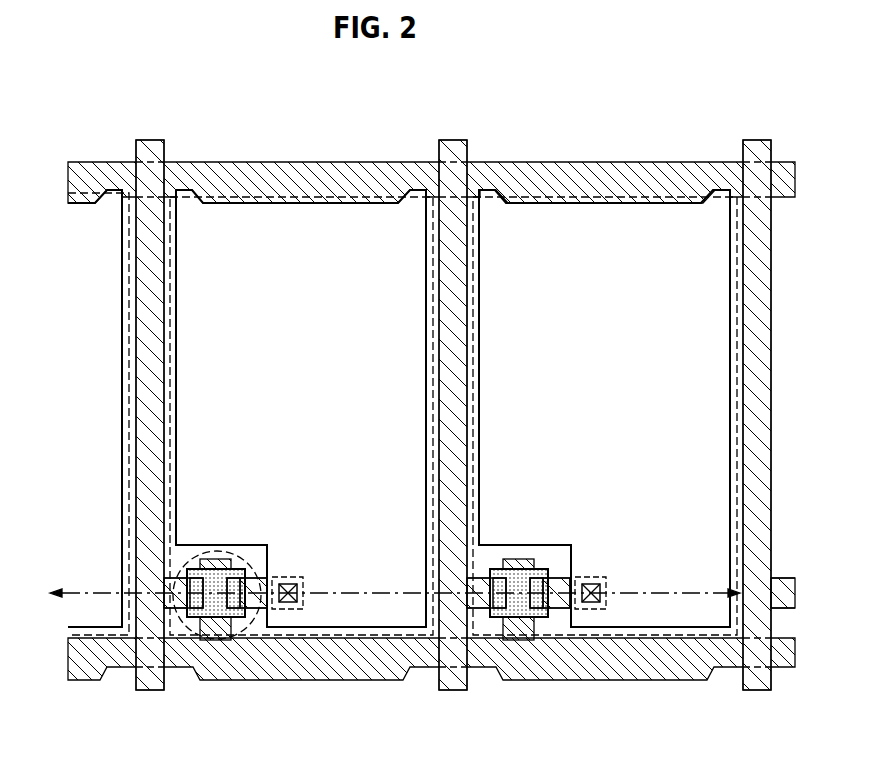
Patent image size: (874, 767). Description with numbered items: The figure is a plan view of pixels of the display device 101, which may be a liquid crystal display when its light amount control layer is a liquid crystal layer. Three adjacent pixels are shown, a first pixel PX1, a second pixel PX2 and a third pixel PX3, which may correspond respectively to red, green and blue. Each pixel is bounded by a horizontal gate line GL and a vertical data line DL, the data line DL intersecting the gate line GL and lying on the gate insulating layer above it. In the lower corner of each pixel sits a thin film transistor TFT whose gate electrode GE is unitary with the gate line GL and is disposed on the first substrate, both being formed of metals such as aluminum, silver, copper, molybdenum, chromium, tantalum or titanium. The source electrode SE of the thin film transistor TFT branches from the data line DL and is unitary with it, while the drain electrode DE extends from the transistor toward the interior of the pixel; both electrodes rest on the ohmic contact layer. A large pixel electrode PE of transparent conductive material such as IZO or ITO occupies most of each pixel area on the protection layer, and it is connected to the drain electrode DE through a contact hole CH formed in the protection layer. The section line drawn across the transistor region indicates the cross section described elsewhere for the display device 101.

The display device 101 is at (107, 88).
The data line DL is at (152, 140).
The gate line GL is at (178, 176).
The first pixel PX1 is at (168, 413).
The second pixel PX2 is at (735, 413).
The third pixel PX3 is at (95, 215).
The gate electrode GE is at (215, 559).
The source electrode SE is at (194, 611).
The drain electrode DE is at (234, 611).
The thin film transistor TFT is at (260, 626).
The contact hole CH is at (287, 606).
The pixel electrode PE is at (344, 610).